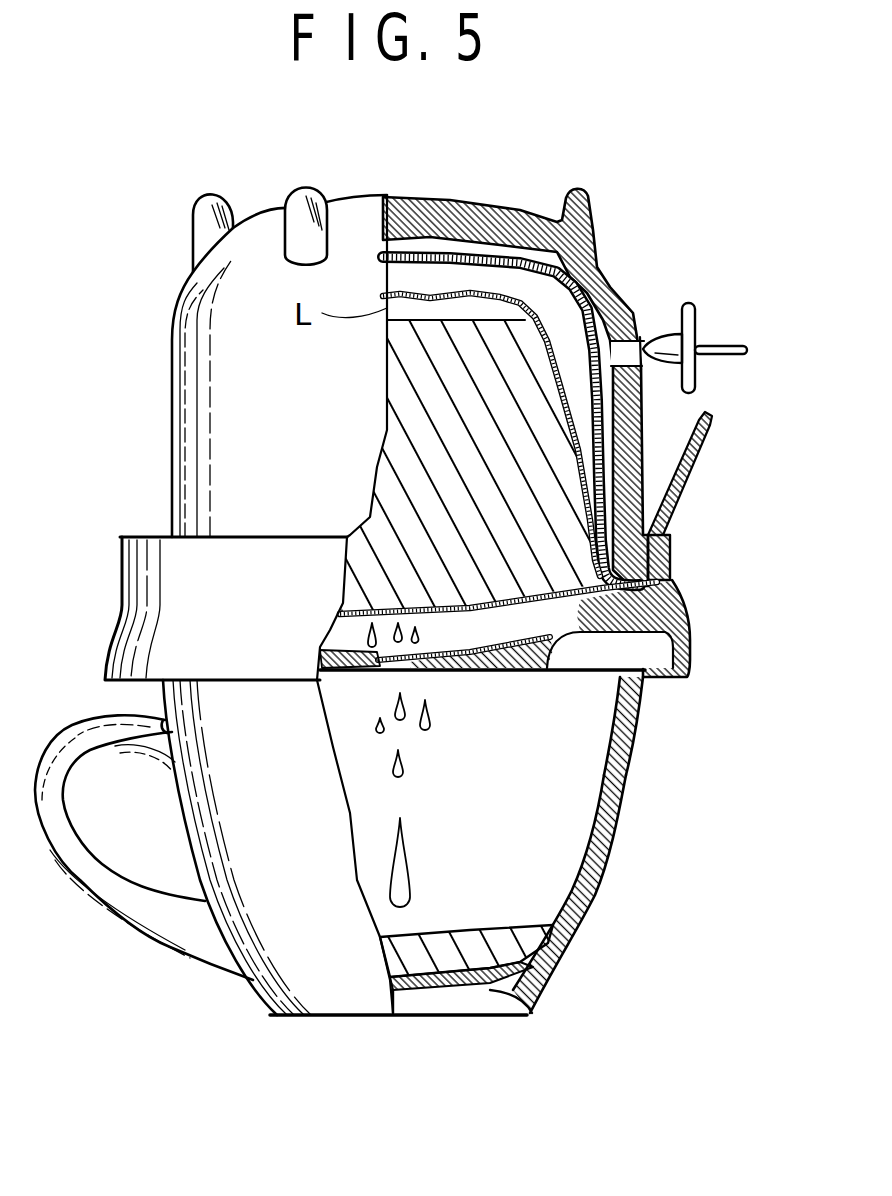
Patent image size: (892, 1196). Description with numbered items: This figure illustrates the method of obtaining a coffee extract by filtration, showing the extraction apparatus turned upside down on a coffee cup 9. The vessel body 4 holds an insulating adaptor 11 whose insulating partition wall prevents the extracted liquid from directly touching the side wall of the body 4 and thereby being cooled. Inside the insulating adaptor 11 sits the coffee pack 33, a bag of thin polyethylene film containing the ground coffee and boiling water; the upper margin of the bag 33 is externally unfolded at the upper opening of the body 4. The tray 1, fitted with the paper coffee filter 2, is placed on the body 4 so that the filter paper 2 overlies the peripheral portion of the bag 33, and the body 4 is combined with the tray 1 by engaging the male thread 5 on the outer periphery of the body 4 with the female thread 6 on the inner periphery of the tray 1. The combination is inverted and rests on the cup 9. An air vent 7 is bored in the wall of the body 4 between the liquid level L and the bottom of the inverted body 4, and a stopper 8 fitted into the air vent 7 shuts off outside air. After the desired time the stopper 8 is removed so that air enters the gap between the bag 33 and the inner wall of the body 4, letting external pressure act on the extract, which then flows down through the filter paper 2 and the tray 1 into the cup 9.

The tray 1 is at (690, 627).
The paper coffee filter 2 is at (567, 600).
The vessel body 4 is at (503, 202).
The male thread 5 is at (670, 578).
The female thread 6 is at (670, 543).
The air vent 7 is at (643, 343).
The stopper 8 is at (707, 348).
The cup 9 is at (628, 820).
The insulating adaptor 11 is at (598, 272).
The coffee pack 33 is at (586, 452).